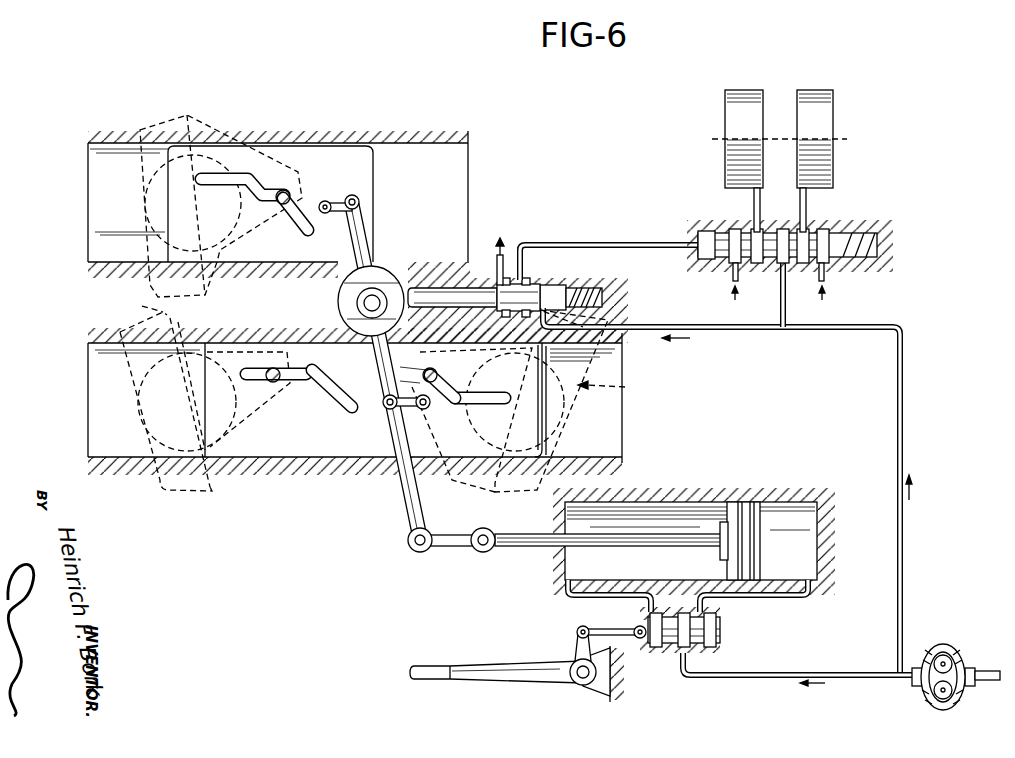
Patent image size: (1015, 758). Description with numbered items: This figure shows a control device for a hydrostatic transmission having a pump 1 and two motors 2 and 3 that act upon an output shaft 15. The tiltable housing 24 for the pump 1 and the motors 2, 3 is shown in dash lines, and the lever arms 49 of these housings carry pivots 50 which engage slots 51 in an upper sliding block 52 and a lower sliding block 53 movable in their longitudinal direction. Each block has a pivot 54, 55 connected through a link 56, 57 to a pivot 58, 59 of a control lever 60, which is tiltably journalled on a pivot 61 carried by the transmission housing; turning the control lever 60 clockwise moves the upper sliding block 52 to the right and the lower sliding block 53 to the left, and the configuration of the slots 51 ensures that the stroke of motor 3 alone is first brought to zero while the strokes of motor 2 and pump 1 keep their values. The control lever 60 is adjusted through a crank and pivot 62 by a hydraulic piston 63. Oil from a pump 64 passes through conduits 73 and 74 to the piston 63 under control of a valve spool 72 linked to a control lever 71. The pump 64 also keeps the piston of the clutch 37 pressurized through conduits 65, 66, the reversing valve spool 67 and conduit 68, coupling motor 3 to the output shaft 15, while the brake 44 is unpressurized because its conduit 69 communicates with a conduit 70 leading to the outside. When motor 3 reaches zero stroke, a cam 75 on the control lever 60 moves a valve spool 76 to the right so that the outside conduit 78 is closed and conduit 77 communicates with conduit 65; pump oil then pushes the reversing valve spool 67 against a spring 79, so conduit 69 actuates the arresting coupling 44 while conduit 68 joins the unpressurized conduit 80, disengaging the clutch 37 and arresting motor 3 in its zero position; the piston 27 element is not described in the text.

The pump 1 is at (208, 110).
The motor 2 is at (171, 498).
The second motor 3 is at (609, 393).
The output shaft 15 is at (846, 141).
The tiltable housing 24 is at (503, 500).
The piston 27 is at (142, 218).
The clutch 37 is at (836, 172).
The brake 44 is at (728, 159).
The lever arms 49 is at (268, 168).
The pivots 50 is at (291, 195).
The slots 51 is at (265, 196).
The upper sliding block 52 is at (356, 152).
The lower sliding block 53 is at (286, 450).
The pivot 54 is at (326, 213).
The pivot 55 is at (447, 412).
The link 56 is at (352, 195).
The link 57 is at (425, 410).
The pivot 58 is at (360, 203).
The pivot 59 is at (386, 410).
The control lever 60 is at (405, 515).
The pivot 61 is at (363, 302).
The crank and pivot 62 is at (460, 535).
The hydraulic piston 63 is at (749, 496).
The pump 64 is at (959, 655).
The conduit 65 is at (654, 326).
The conduit 66 is at (781, 308).
The reversing valve spool 67 is at (834, 240).
The conduit 68 is at (806, 210).
The conduit 69 is at (753, 210).
The conduit 70 is at (733, 280).
The control lever 71 is at (490, 668).
The valve spool 72 is at (722, 635).
The conduit 73 is at (830, 671).
The conduit 74 is at (688, 653).
The cam 75 is at (388, 272).
The valve spool 76 is at (470, 290).
The conduit 77 is at (590, 246).
The conduit 78 is at (505, 262).
The spring 79 is at (880, 260).
The conduit 80 is at (823, 281).